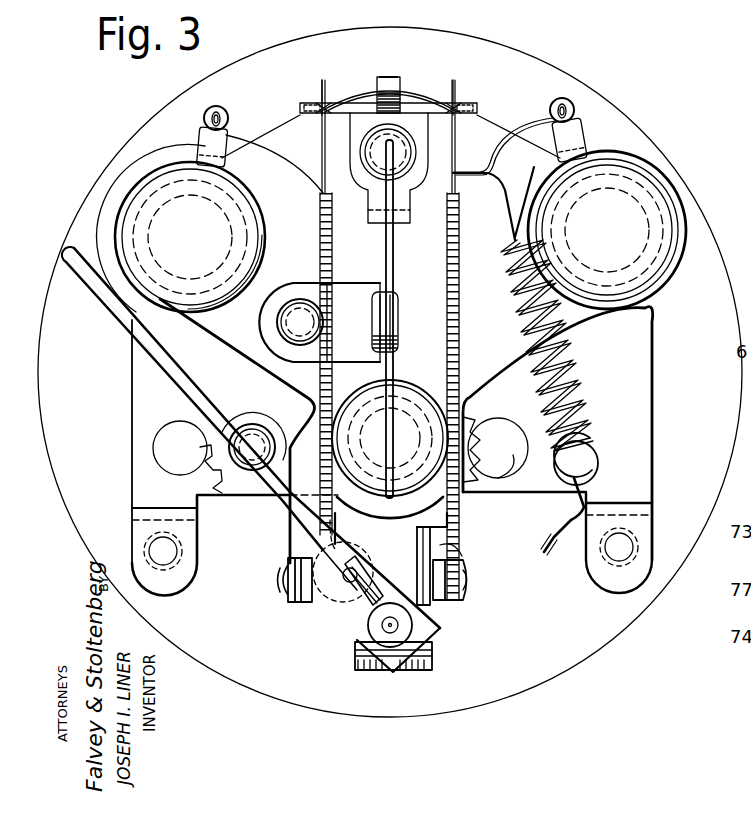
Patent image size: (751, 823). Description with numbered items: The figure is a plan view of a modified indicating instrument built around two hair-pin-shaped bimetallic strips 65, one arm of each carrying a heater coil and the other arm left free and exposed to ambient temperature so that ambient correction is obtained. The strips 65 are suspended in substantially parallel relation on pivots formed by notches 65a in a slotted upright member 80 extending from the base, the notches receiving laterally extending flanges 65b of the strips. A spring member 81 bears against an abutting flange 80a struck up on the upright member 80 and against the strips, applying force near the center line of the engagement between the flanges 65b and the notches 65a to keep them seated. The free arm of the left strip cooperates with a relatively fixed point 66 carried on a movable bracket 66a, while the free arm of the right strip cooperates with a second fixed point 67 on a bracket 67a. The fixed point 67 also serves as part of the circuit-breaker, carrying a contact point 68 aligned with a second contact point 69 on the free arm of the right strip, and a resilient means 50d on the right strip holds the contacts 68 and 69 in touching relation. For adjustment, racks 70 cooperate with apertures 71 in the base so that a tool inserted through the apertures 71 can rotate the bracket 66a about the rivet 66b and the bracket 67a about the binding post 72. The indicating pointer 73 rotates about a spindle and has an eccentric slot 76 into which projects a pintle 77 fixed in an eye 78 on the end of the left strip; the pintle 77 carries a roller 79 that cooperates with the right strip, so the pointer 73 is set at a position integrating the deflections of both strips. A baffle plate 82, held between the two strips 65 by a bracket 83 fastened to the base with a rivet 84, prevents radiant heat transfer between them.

The resilient means 50d is at (576, 380).
The bimetallic strips 65 is at (320, 389).
The notches 65a is at (478, 113).
The laterally extending flanges 65b is at (322, 105).
The fixed point 66 is at (288, 608).
The bracket 66a is at (262, 548).
The rivet 66b is at (245, 438).
The fixed point 67 is at (444, 612).
The bracket 67a is at (466, 520).
The contact point 68 is at (462, 556).
The contact point 69 is at (468, 578).
The racks 70 is at (206, 446).
The apertures 71 is at (172, 430).
The binding post 72 is at (408, 400).
The indicating pointer 73 is at (143, 343).
The slot 76 is at (352, 618).
The pintle 77 is at (318, 595).
The eye 78 is at (418, 534).
The roller 79 is at (396, 578).
The slotted upright member 80 is at (400, 103).
The abutting flange 80a is at (388, 78).
The spring member 81 is at (360, 103).
The baffle plate 82 is at (394, 270).
The bracket 83 is at (355, 297).
The rivet 84 is at (296, 312).